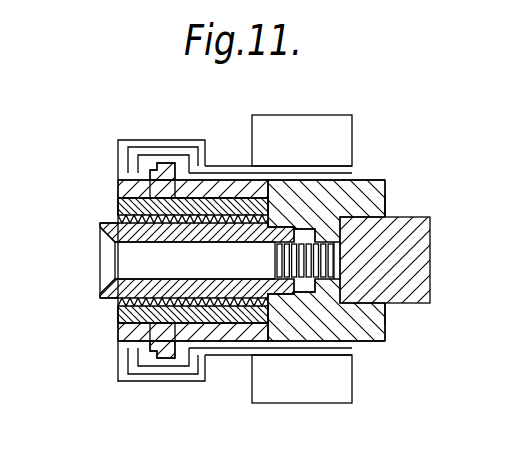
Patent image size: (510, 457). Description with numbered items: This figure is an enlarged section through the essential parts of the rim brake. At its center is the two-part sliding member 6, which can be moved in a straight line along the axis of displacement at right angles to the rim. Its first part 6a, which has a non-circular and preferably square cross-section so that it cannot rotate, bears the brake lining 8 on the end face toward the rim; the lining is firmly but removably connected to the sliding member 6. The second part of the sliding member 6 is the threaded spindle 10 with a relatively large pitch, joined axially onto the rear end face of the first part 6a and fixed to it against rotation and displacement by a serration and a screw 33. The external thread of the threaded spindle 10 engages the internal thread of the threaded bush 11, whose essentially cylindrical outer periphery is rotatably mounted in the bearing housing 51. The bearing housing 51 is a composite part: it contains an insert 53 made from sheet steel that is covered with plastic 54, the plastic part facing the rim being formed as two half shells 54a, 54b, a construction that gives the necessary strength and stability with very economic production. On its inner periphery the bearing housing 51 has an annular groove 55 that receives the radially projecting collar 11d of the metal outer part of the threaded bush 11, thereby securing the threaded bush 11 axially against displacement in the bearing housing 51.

The sliding member 6 is at (364, 183).
The first part of the sliding member 6a is at (368, 197).
The brake lining 8 is at (423, 238).
The threaded spindle 10 is at (128, 289).
The threaded bush 11 is at (118, 335).
The radially projecting collar 11d is at (179, 162).
The screw 33 is at (138, 262).
The bearing housing 51 is at (130, 141).
The insert 53 is at (225, 170).
The plastic 54 is at (118, 158).
The half shell 54a is at (300, 131).
The half shell 54b is at (296, 392).
The annular groove 55 is at (122, 186).